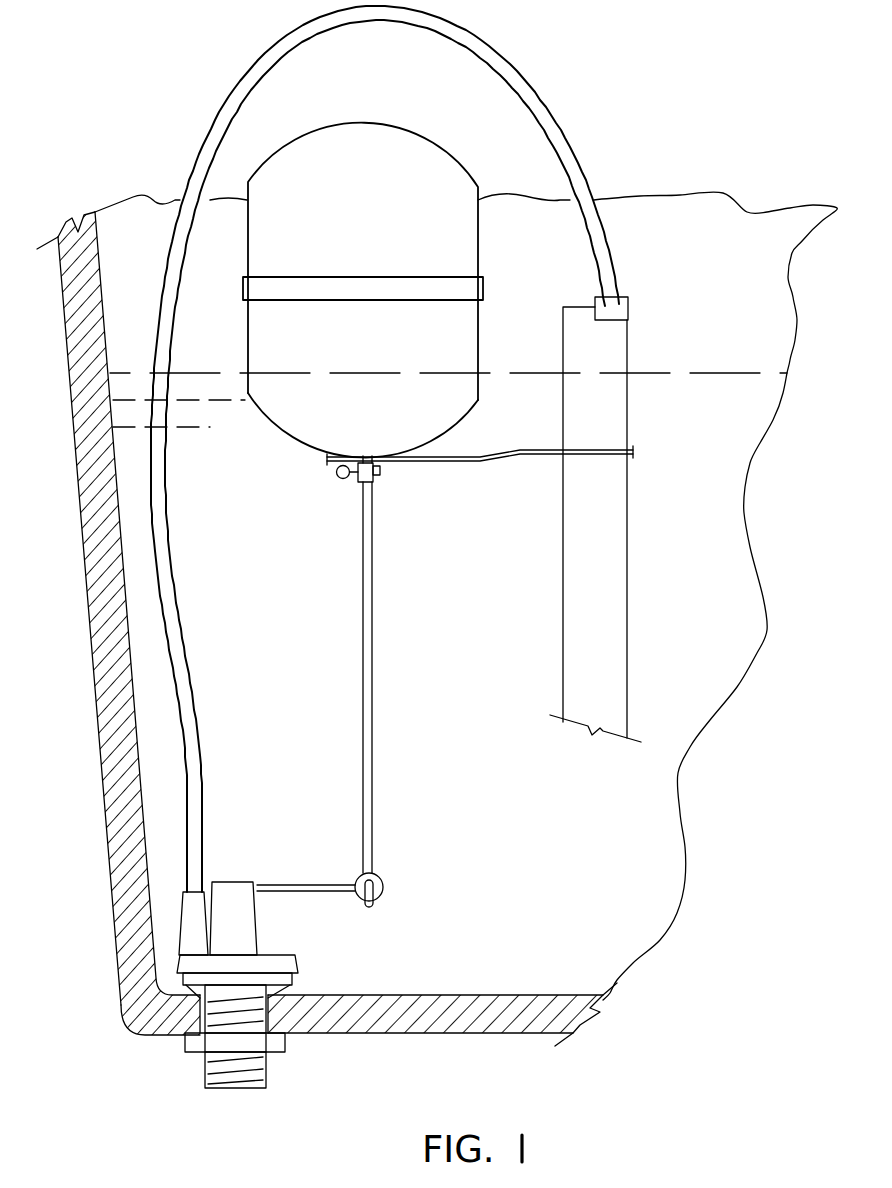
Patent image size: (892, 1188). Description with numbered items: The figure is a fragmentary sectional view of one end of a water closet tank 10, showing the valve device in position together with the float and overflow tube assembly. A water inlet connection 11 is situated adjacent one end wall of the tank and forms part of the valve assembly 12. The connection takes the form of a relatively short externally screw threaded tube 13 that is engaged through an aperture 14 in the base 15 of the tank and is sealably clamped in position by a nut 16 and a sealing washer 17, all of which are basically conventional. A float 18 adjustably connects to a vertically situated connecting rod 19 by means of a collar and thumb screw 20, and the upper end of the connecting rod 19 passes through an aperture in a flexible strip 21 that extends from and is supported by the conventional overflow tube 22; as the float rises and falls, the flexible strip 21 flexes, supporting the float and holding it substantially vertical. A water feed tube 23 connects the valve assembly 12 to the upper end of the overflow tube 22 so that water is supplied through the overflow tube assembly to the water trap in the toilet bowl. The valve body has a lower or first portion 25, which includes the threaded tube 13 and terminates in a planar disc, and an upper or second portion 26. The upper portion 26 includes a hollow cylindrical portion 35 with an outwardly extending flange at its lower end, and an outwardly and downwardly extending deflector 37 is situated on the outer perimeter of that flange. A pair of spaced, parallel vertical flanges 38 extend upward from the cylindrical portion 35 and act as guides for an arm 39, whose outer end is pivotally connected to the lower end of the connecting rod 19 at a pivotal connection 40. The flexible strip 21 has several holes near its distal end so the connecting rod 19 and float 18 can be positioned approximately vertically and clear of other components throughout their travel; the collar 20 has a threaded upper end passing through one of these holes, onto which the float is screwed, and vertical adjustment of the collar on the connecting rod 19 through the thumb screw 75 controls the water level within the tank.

The water closet tank 10 is at (110, 822).
The water inlet connection 11 is at (267, 1070).
The valve assembly 12 is at (297, 948).
The externally screw threaded tube 13 is at (205, 1068).
The aperture 14 is at (290, 1010).
The base 15 is at (462, 1005).
The nut 16 is at (285, 1045).
The sealing washer 17 is at (150, 1030).
The float 18 is at (300, 385).
The connecting rod 19 is at (368, 592).
The collar and thumb screw 20 is at (375, 475).
The flexible strip 21 is at (488, 462).
The overflow tube 22 is at (605, 503).
The water feed tube 23 is at (552, 140).
The lower or first portion 25 is at (185, 1038).
The upper or second portion 26 is at (235, 955).
The hollow cylindrical portion 35 is at (235, 915).
The deflector 37 is at (186, 985).
The flanges 38 is at (224, 890).
The arm 39 is at (307, 886).
The pivotal connection 40 is at (378, 876).
The thumb screw 75 is at (350, 479).